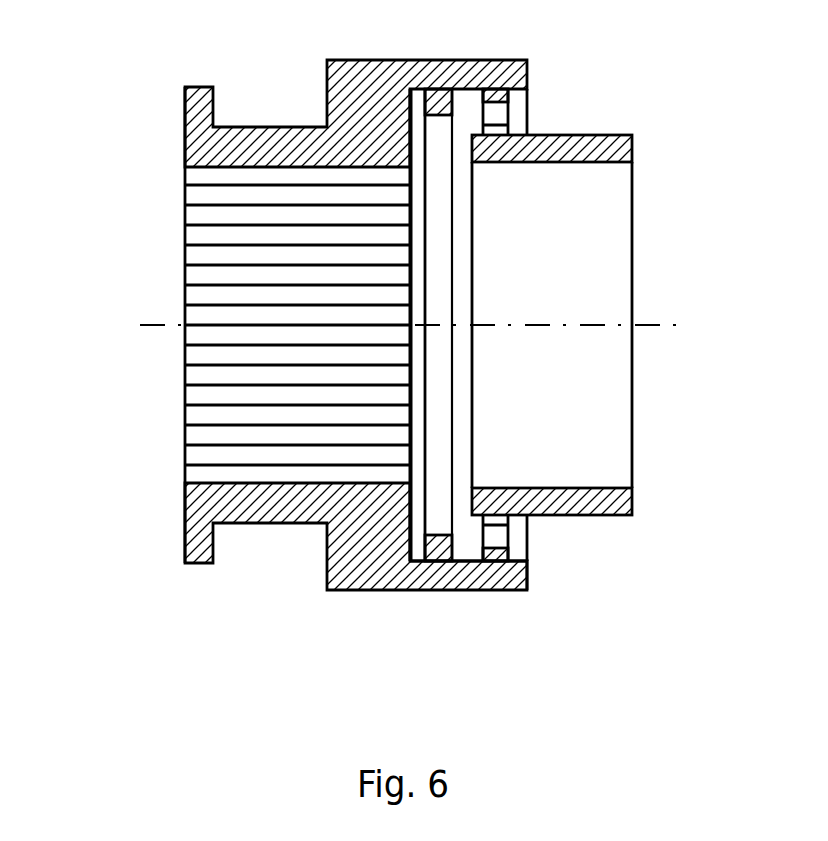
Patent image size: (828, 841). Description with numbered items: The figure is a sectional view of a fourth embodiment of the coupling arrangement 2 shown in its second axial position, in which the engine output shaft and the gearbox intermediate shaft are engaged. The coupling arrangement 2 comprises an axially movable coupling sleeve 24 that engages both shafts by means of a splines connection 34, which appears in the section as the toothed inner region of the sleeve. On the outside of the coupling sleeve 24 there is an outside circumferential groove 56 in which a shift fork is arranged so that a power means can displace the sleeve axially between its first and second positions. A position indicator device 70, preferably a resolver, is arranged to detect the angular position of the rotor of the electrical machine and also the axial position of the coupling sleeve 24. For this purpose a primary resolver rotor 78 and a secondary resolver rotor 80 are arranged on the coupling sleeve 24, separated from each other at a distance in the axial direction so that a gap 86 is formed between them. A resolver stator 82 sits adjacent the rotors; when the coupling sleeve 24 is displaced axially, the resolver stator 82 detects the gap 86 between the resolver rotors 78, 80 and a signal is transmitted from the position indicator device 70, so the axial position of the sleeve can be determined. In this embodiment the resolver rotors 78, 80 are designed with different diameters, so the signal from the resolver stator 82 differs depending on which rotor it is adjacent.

The coupling arrangement 2 is at (195, 585).
The axially movable coupling sleeve 24 is at (527, 570).
The splines connection 34 is at (205, 432).
The outside circumferential groove 56 is at (267, 125).
The position indicator device 70 is at (562, 546).
The primary resolver rotor 78 is at (447, 100).
The secondary resolver rotor 80 is at (508, 103).
The resolver stator 82 is at (633, 148).
The gap 86 is at (463, 92).